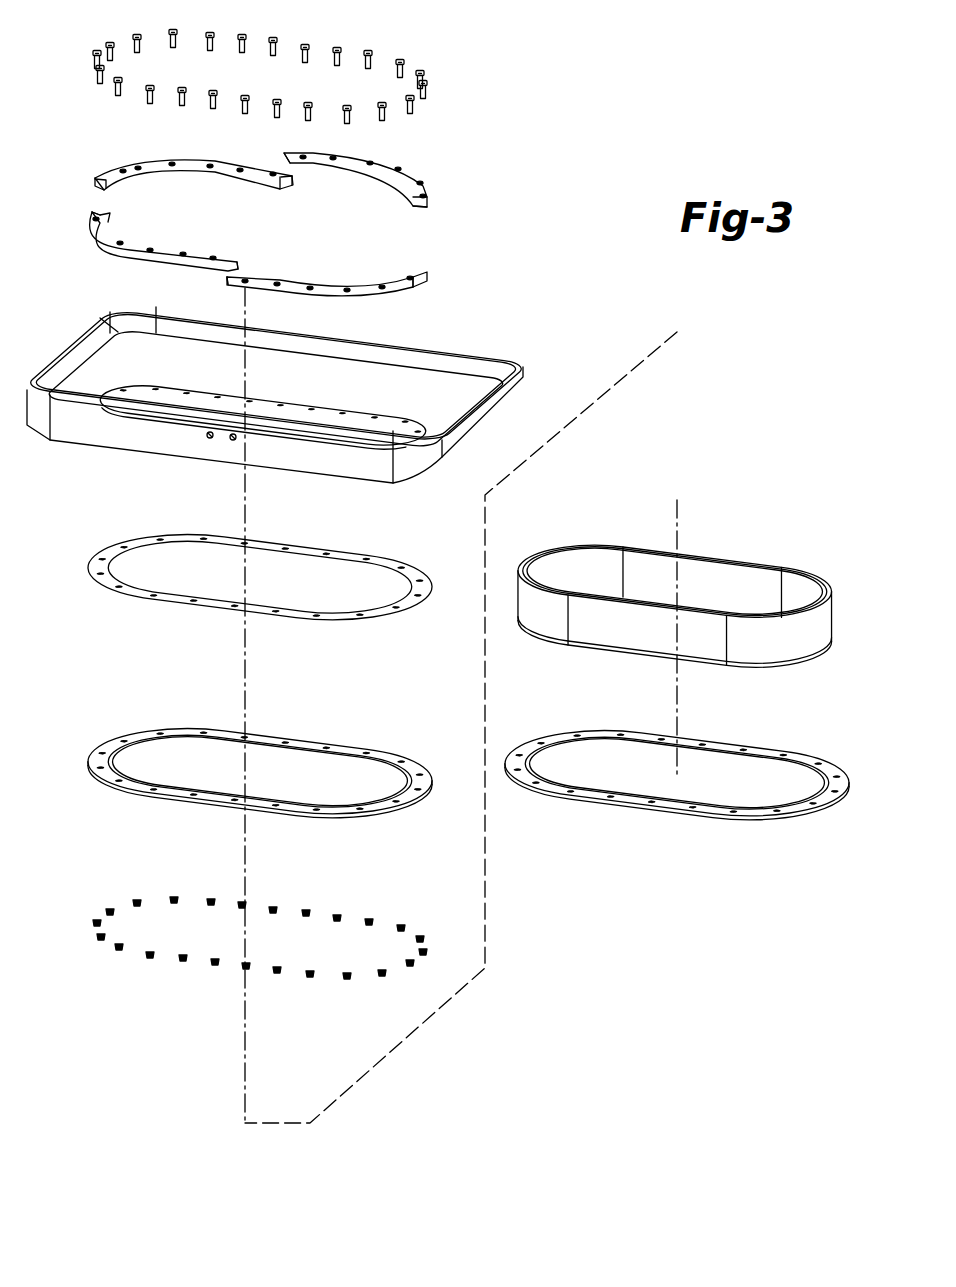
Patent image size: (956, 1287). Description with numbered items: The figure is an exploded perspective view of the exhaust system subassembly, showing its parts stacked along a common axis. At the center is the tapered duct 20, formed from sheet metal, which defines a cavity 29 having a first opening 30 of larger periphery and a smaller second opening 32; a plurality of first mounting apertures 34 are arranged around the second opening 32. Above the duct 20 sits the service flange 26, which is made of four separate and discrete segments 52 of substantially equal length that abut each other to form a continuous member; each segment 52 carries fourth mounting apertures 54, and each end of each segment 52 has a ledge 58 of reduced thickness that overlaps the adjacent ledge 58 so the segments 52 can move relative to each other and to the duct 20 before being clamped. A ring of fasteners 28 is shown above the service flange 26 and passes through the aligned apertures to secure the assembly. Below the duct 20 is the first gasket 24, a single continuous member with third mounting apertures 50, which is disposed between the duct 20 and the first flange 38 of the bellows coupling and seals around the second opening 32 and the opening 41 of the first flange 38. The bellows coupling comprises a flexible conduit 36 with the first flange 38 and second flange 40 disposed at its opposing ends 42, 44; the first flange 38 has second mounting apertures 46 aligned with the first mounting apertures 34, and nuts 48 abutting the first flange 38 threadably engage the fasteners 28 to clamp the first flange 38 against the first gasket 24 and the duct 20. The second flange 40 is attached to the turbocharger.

The tapered duct 20 is at (498, 338).
The first gasket 24 is at (412, 572).
The service flange 26 is at (447, 233).
The fasteners 28 is at (428, 88).
The cavity 29 is at (453, 390).
The first opening 30 is at (518, 407).
The second opening 32 is at (322, 415).
The first mounting apertures 34 is at (173, 395).
The flexible conduit 36 is at (790, 640).
The first flange 38 is at (390, 758).
The second flange 40 is at (765, 752).
The opening 41 is at (350, 760).
The first end 42 is at (735, 555).
The second end 44 is at (725, 668).
The second mounting apertures 46 is at (173, 730).
The nuts 48 is at (173, 898).
The third mounting apertures 50 is at (173, 537).
The segments 52 is at (100, 183).
The fourth mounting apertures 54 is at (172, 163).
The ledge 58 is at (108, 186).